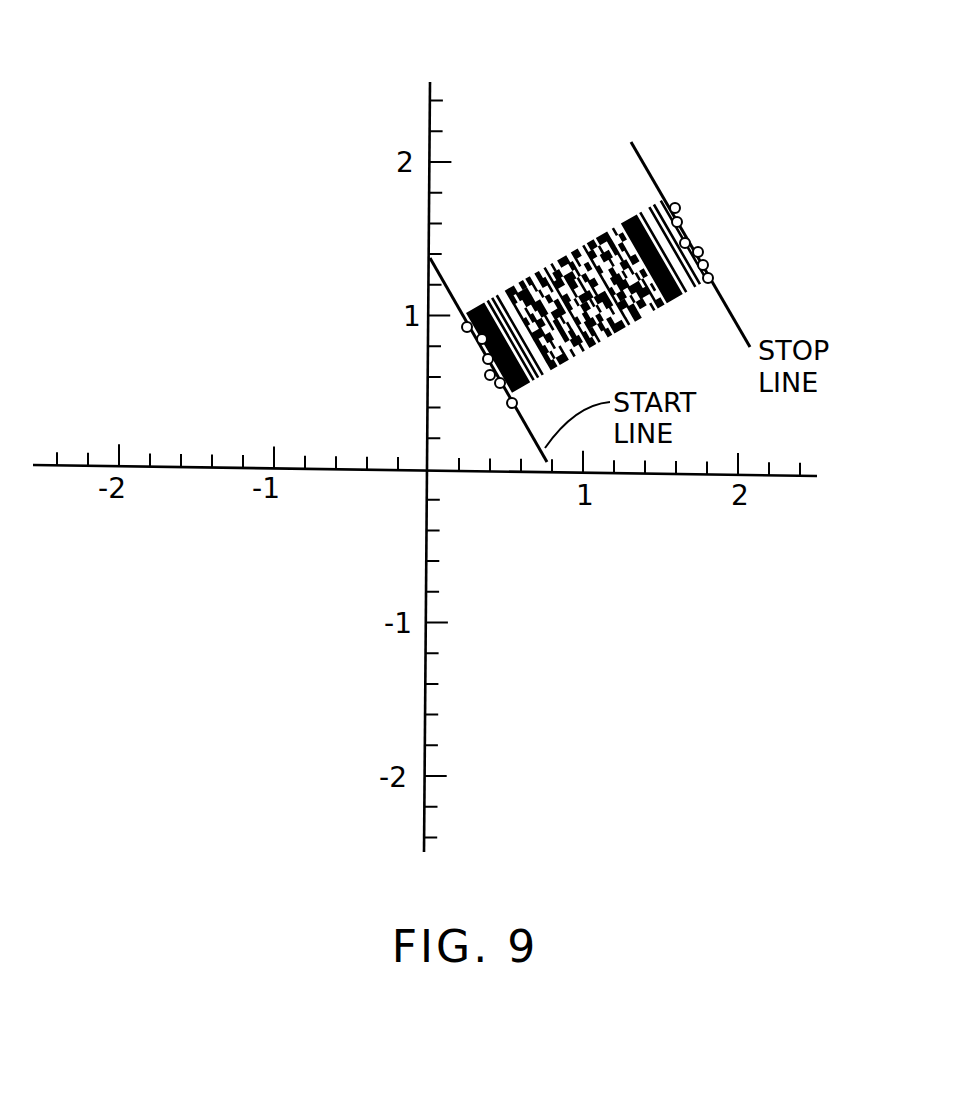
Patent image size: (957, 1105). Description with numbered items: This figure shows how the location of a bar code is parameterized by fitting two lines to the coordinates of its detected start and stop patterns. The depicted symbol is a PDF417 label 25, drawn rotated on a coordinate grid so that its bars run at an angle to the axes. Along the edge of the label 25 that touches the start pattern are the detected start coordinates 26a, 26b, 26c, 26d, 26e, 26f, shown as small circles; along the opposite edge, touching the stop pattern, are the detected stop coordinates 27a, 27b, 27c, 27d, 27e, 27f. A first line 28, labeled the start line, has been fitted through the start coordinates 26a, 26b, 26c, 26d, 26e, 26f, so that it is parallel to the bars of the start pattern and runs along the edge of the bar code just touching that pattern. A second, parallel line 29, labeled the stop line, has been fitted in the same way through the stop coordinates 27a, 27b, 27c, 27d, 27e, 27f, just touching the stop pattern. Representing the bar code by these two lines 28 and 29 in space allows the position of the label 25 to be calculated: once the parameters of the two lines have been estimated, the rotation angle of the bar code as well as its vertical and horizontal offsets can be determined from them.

The PDF417 label 25 is at (548, 272).
The detected start coordinate 26a is at (462, 324).
The detected start coordinate 26b is at (477, 338).
The detected start coordinate 26c is at (483, 358).
The detected start coordinate 26d is at (485, 375).
The detected start coordinate 26e is at (495, 384).
The detected start coordinate 26f is at (507, 404).
The detected stop coordinate 27a is at (679, 205).
The detected stop coordinate 27b is at (682, 221).
The detected stop coordinate 27c is at (690, 242).
The detected stop coordinate 27d is at (703, 252).
The detected stop coordinate 27e is at (708, 266).
The detected stop coordinate 27f is at (713, 280).
The fitted start line 28 is at (438, 272).
The fitted stop line 29 is at (642, 150).